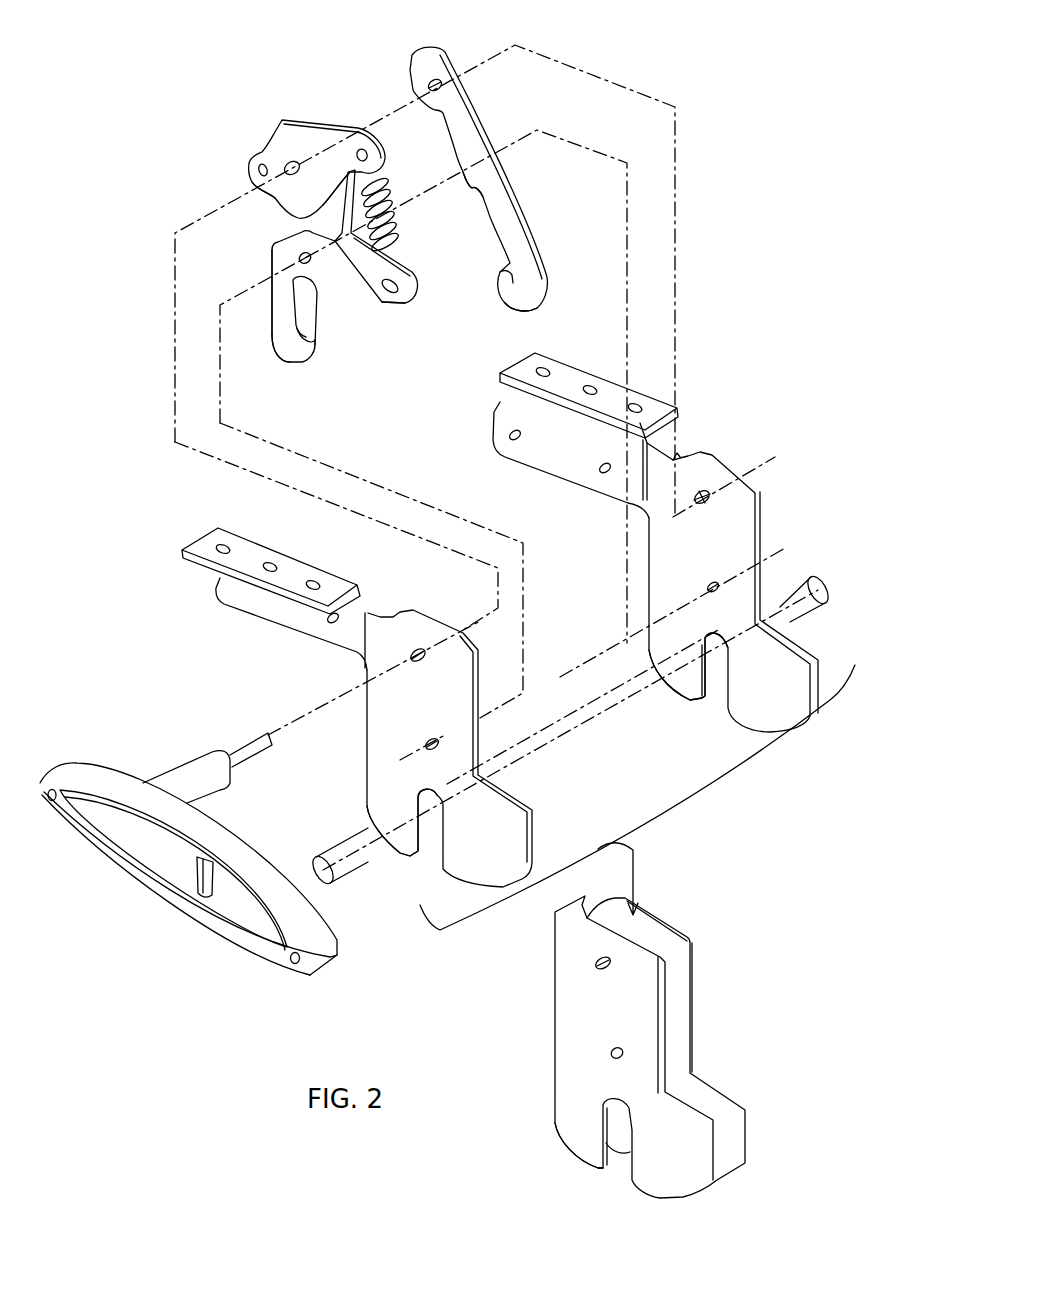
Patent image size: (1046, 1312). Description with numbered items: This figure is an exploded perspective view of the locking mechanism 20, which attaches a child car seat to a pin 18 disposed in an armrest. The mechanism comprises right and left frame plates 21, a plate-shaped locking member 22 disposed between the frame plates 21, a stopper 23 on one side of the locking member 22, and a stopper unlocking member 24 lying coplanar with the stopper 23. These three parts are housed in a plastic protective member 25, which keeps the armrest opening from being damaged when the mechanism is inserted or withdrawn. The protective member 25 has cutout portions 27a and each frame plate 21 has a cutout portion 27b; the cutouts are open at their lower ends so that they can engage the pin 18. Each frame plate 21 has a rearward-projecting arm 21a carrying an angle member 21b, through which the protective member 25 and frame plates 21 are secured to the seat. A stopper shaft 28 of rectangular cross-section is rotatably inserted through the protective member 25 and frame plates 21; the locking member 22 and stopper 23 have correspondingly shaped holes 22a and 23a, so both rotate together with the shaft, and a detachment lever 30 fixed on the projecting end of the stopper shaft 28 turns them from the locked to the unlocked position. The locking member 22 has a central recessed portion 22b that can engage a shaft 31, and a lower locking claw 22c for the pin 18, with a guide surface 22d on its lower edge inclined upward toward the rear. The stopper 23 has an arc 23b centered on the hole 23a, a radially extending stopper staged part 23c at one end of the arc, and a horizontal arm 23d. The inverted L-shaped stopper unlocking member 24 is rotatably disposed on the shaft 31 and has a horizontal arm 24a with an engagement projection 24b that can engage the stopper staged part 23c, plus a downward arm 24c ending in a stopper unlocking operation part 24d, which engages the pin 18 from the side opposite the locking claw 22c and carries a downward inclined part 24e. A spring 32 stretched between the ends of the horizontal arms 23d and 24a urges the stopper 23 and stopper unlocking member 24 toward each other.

The pin 18 is at (380, 855).
The locking mechanism 20 is at (718, 331).
The frame plate 21 is at (500, 602).
The arm 21a is at (258, 608).
The angle member 21b is at (243, 553).
The locking member 22 is at (567, 234).
The hole 22a is at (425, 52).
The recessed portion 22b is at (480, 192).
The locking claw 22c is at (528, 277).
The guide surface 22d is at (517, 312).
The stopper 23 is at (282, 120).
The hole 23a is at (260, 152).
The arc 23b is at (324, 175).
The stopper staged part 23c is at (256, 192).
The horizontal arm 23d is at (360, 142).
The stopper unlocking member 24 is at (335, 295).
The horizontal arm 24a is at (412, 308).
The engagement projection 24b is at (384, 305).
The arm 24c is at (277, 327).
The stopper unlocking operation part 24d is at (287, 354).
The inclined part 24e is at (315, 342).
The protective member 25 is at (603, 1047).
The cutout portion 27a is at (570, 1124).
The cutout portion 27b is at (397, 813).
The stopper shaft 28 is at (171, 778).
The detachment lever 30 is at (157, 907).
The shaft 31 is at (232, 263).
The spring 32 is at (393, 188).